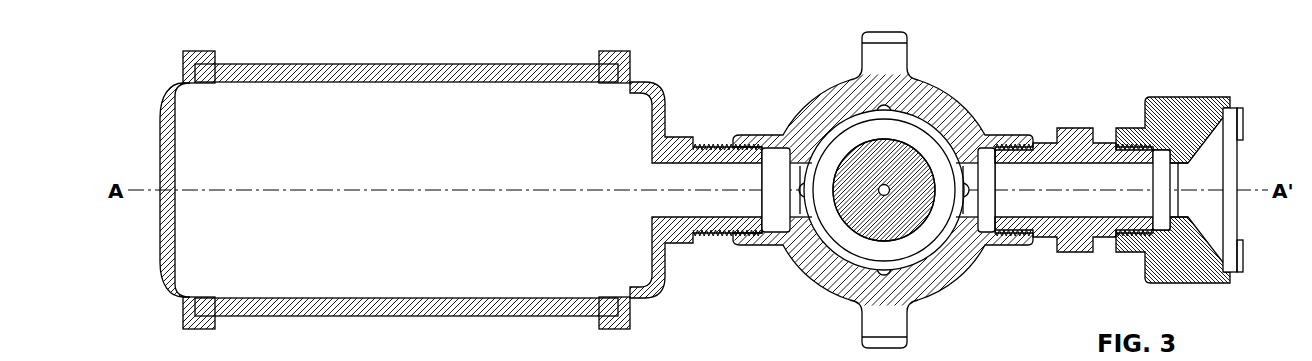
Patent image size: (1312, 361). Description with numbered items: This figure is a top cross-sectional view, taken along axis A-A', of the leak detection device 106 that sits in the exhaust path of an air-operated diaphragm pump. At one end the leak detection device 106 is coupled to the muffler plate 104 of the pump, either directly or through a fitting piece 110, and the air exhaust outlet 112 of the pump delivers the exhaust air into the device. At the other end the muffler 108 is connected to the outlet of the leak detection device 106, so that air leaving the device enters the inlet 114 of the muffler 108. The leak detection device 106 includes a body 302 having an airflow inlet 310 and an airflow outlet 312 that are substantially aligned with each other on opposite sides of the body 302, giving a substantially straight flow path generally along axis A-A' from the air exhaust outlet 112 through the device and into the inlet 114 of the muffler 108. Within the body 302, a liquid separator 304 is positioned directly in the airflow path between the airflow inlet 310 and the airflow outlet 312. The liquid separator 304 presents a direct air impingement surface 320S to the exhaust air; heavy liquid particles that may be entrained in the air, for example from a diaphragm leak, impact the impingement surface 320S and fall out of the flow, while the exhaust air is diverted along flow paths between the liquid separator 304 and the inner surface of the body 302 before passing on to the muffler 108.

The muffler plate 104 is at (1185, 95).
The leak detection device 106 is at (863, 188).
The muffler 108 is at (433, 130).
The fitting piece 110 is at (1073, 252).
The air exhaust outlet 112 is at (1245, 157).
The inlet of muffler 114 is at (658, 175).
The body 302 is at (818, 272).
The liquid separator 304 is at (920, 160).
The airflow inlet 310 is at (1002, 177).
The airflow outlet 312 is at (757, 177).
The direct air impingement surface 320S is at (937, 195).